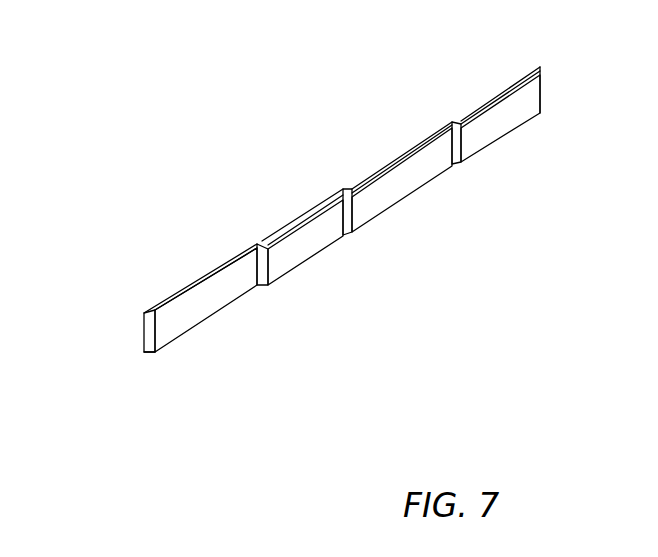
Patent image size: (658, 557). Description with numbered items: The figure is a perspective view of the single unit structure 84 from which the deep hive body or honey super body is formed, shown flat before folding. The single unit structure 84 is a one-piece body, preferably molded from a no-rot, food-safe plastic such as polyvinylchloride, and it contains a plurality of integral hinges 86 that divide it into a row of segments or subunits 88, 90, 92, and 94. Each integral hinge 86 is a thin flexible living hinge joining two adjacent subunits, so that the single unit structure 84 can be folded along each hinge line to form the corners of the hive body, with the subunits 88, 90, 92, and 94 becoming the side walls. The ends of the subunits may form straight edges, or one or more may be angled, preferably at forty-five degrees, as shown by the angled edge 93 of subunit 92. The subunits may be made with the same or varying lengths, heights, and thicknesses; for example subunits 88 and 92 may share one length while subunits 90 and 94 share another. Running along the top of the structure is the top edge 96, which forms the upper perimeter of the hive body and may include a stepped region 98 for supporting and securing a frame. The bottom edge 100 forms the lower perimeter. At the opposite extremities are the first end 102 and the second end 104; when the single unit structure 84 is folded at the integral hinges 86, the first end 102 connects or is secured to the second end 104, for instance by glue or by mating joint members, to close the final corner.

The single unit structure 84 is at (170, 231).
The integral hinge 86 is at (258, 245).
The subunit 88 is at (223, 308).
The subunit 90 is at (303, 260).
The subunit 92 is at (410, 188).
The angled edge 93 is at (355, 233).
The subunit 94 is at (512, 127).
The top edge 96 is at (168, 300).
The stepped region 98 is at (290, 227).
The bottom edge 100 is at (153, 353).
The first end 102 is at (152, 339).
The second end 104 is at (541, 94).